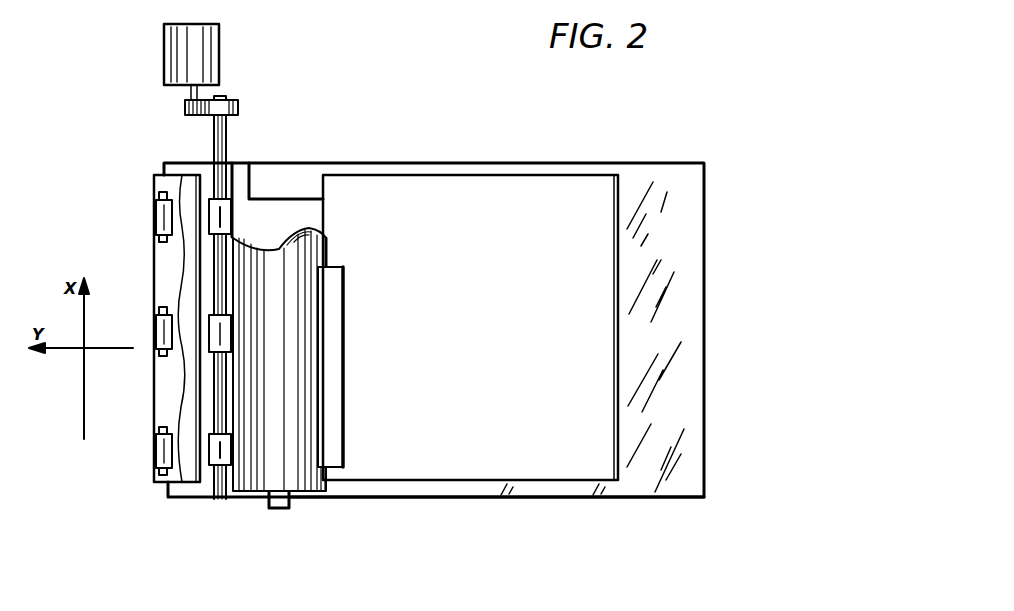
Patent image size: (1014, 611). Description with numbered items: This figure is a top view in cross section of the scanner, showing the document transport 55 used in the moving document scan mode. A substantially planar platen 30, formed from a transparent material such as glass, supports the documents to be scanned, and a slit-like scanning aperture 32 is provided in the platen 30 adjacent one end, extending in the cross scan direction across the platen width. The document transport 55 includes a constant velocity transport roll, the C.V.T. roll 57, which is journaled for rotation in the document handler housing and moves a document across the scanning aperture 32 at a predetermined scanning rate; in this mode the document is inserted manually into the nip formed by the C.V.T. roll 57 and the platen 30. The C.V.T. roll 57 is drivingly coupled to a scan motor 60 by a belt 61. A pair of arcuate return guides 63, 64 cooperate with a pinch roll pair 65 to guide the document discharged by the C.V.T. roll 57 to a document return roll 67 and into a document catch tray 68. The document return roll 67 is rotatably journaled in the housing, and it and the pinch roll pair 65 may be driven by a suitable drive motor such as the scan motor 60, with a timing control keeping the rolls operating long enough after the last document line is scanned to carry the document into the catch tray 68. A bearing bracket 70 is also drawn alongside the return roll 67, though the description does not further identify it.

The platen 30 is at (677, 474).
The scanning aperture 32 is at (241, 188).
The document transport 55 is at (227, 508).
The C.V.T. roll 57 is at (215, 333).
The scan motor 60 is at (208, 44).
The belt 61 is at (186, 106).
The arcuate return guide 63 is at (165, 257).
The arcuate return guide 64 is at (190, 378).
The pinch roll pair 65 is at (163, 213).
The document return roll 67 is at (300, 307).
The document catch tray 68 is at (497, 185).
The bearing bracket 70 is at (328, 370).